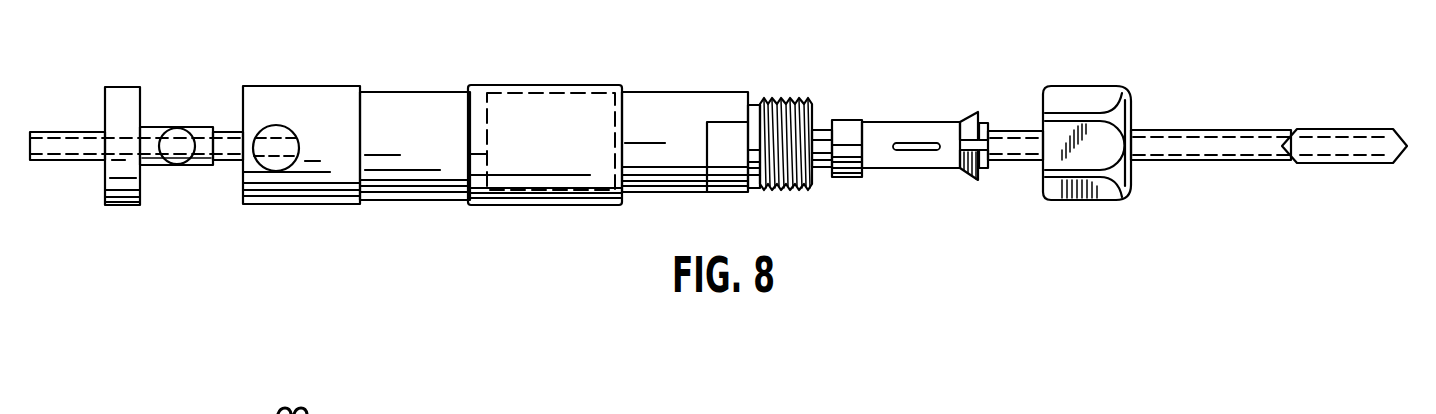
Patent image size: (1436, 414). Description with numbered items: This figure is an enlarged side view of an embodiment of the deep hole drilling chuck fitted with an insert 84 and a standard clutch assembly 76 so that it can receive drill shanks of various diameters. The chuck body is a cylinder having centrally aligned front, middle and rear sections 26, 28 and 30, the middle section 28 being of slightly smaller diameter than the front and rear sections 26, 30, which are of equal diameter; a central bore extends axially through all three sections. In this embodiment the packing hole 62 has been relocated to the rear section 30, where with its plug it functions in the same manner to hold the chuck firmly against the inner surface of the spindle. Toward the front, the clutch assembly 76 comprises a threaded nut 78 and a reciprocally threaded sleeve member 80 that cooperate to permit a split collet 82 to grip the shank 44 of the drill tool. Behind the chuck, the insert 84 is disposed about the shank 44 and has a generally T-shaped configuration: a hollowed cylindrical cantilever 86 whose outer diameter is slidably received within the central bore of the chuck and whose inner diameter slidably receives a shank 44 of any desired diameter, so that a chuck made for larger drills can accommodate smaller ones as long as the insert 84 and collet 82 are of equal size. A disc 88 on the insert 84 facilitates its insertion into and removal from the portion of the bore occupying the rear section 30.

The front section 26 is at (513, 205).
The middle section 28 is at (410, 203).
The rear section 30 is at (293, 205).
The shank 44 is at (72, 145).
The packing hole 62 is at (270, 128).
The clutch assembly 76 is at (872, 112).
The threaded nut 78 is at (1060, 200).
The sleeve member 80 is at (672, 194).
The split collet 82 is at (880, 176).
The insert 84 is at (163, 92).
The hollowed cylindrical cantilever 86 is at (213, 128).
The disc 88 is at (127, 206).